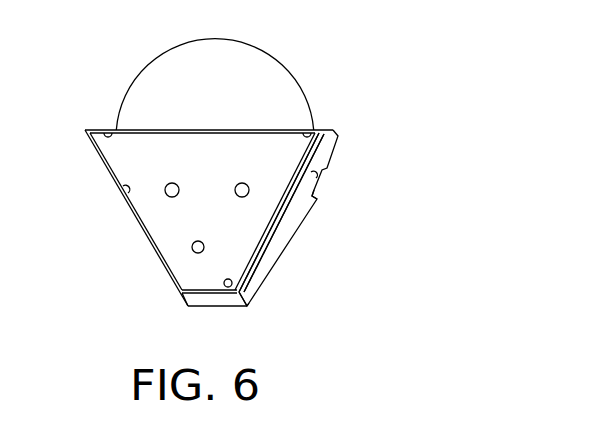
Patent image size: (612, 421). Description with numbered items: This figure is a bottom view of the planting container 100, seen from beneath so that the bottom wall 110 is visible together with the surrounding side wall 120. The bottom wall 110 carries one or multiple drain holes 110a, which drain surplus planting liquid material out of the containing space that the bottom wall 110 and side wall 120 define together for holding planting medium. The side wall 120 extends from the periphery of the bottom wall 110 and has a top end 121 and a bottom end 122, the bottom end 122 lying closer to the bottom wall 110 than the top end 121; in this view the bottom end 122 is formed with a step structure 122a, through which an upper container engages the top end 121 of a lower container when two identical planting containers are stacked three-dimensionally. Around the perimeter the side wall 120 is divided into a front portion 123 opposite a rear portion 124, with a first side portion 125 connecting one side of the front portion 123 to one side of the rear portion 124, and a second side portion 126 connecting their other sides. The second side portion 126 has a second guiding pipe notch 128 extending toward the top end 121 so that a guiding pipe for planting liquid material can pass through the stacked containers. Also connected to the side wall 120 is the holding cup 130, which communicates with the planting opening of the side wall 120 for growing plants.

The planting container 100 is at (448, 128).
The bottom wall 110 is at (185, 267).
The drain hole 110a is at (171, 192).
The side wall 120 is at (327, 158).
The top end 121 is at (250, 297).
The bottom end 122 is at (252, 258).
The step structure 122a is at (263, 243).
The front portion 123 is at (107, 127).
The rear portion 124 is at (210, 302).
The first side portion 125 is at (123, 190).
The second side portion 126 is at (290, 212).
The second guiding pipe notch 128 is at (310, 186).
The holding cup 130 is at (158, 56).